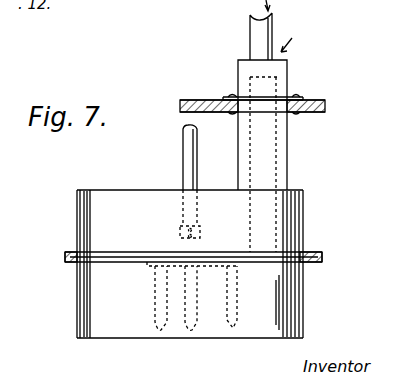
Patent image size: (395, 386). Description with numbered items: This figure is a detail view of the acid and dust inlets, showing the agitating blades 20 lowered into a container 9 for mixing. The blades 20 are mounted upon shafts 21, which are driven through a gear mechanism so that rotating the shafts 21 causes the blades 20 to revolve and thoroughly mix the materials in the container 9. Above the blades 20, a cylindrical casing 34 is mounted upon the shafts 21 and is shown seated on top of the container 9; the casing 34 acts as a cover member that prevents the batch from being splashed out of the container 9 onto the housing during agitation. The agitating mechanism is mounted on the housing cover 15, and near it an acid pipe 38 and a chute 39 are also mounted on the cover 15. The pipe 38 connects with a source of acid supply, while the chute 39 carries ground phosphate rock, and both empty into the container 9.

The tank body 9 is at (90, 296).
The cover 15 is at (326, 106).
The blades 20 is at (230, 316).
The shafts 21 is at (183, 163).
The cylindrical casing 34 is at (302, 206).
The acid pipe 38 is at (270, 32).
The chute 39 is at (288, 77).